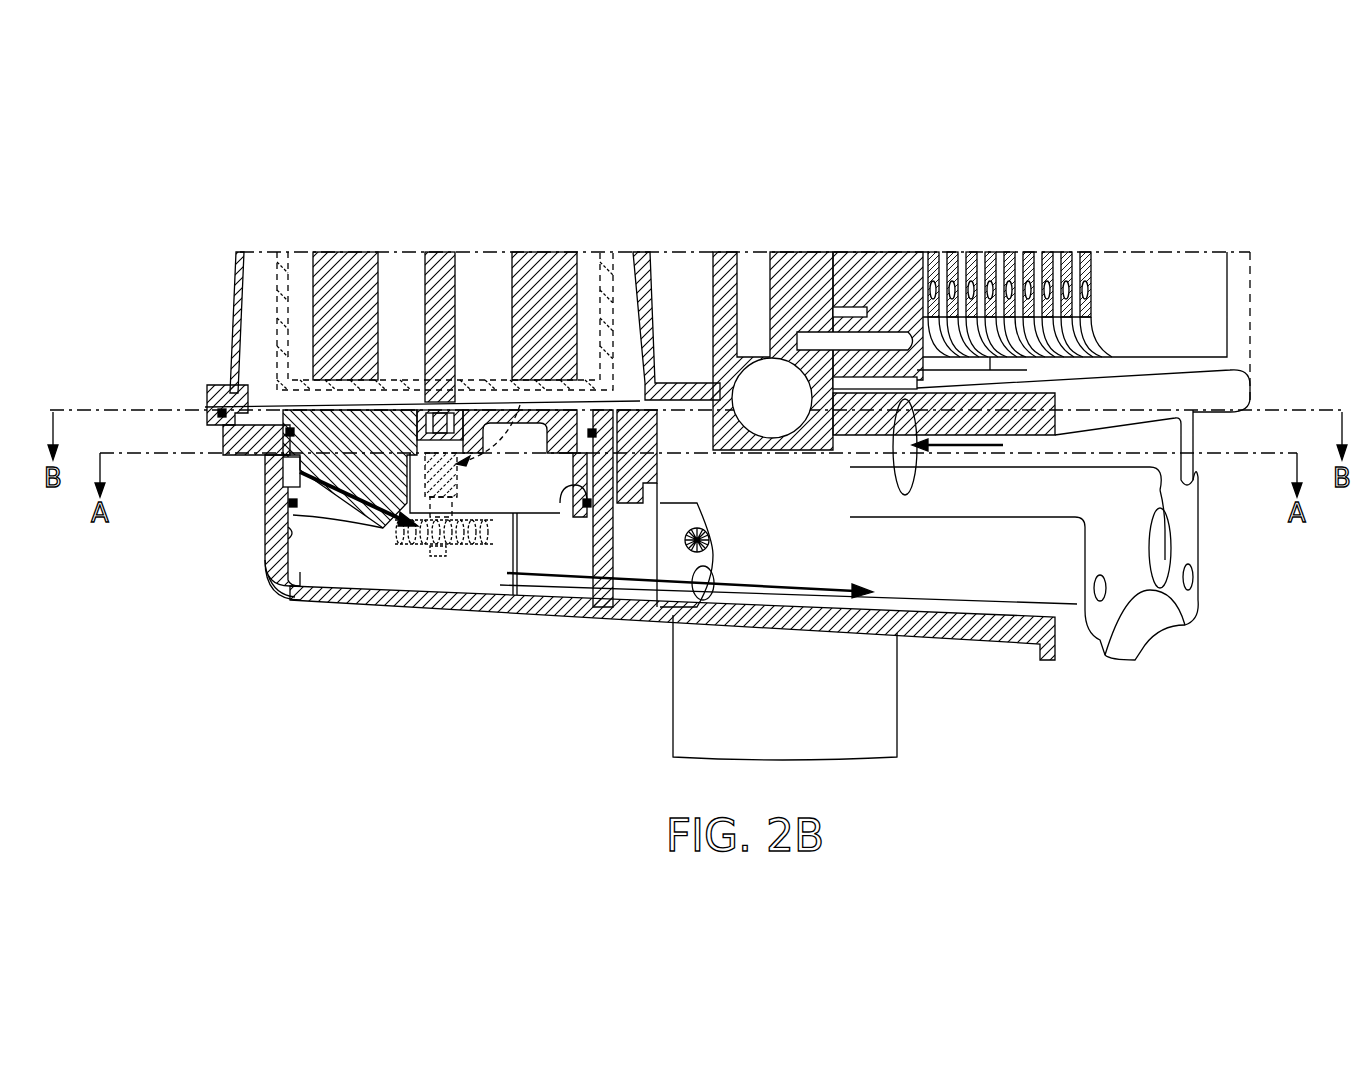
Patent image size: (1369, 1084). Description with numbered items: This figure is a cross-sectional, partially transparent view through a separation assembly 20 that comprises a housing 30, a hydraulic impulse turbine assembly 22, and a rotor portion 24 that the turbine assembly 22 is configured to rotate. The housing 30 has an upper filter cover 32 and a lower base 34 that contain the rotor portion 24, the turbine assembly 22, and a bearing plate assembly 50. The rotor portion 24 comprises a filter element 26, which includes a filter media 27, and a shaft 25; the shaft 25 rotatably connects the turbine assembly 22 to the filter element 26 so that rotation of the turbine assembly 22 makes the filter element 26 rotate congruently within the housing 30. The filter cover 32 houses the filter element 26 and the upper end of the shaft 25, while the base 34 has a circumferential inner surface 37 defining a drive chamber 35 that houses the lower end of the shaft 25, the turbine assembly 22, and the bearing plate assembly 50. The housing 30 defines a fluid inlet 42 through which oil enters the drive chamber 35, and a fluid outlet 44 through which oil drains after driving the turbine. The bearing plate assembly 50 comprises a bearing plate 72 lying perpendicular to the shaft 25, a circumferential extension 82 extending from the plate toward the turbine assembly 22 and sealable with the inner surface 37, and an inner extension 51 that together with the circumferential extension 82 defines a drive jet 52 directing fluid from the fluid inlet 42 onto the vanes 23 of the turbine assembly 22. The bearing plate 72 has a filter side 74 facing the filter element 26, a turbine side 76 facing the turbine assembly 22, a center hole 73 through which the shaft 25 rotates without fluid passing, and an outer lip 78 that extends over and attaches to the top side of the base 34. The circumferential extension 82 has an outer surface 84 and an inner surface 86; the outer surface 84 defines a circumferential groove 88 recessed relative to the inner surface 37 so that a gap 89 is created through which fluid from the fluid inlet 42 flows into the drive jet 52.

The separation assembly 20 is at (1052, 212).
The turbine assembly 22 is at (438, 562).
The vane 23 is at (462, 550).
The rotor portion 24 is at (455, 455).
The shaft 25 is at (492, 400).
The filter element 26 is at (258, 272).
The filter media 27 is at (305, 268).
The housing 30 is at (980, 645).
The filter cover 32 is at (236, 285).
The base 34 is at (265, 505).
The drive chamber 35 is at (317, 572).
The inner surface 37 is at (290, 533).
The fluid inlet 42 is at (896, 440).
The fluid outlet 44 is at (1007, 590).
The bearing plate assembly 50 is at (273, 577).
The inner extension 51 is at (323, 533).
The drive jet 52 is at (300, 408).
The bearing plate 72 is at (600, 410).
The center hole 73 is at (437, 408).
The filter side 74 is at (262, 407).
The turbine side 76 is at (250, 428).
The outer lip 78 is at (645, 465).
The circumferential extension 82 is at (517, 517).
The outer surface 84 is at (580, 500).
The inner surface 86 is at (553, 520).
The circumferential groove 88 is at (600, 427).
The gap 89 is at (287, 468).